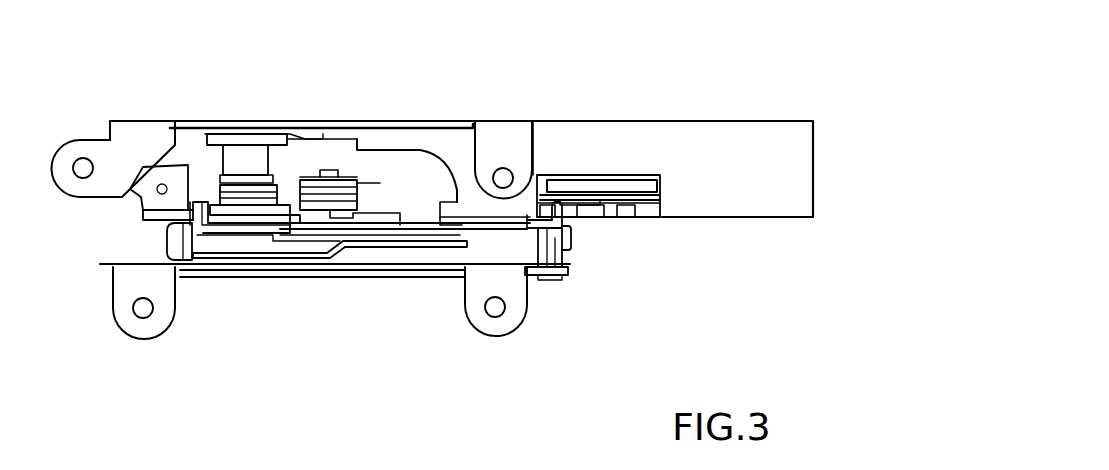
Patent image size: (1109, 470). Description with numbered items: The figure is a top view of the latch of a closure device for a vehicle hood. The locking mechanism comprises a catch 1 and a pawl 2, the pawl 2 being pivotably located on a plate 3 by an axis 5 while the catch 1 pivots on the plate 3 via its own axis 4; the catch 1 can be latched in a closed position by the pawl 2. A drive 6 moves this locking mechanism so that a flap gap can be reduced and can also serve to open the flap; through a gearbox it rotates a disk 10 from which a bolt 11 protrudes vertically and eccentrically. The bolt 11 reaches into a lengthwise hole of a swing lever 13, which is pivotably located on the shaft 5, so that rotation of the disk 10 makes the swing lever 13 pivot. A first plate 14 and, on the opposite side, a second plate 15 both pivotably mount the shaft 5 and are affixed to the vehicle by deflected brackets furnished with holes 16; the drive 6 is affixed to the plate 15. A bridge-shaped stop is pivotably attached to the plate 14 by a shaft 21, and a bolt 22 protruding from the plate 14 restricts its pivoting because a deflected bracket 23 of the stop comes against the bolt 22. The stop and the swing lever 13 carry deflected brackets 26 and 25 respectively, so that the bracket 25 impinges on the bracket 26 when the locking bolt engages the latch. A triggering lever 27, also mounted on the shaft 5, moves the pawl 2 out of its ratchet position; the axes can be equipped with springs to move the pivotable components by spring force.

The catch 1 is at (488, 228).
The pawl 2 is at (220, 232).
The plate 3 is at (393, 250).
The axis 4 is at (333, 170).
The axis or shaft 5 is at (247, 245).
The drive 6 is at (717, 227).
The disk 10 is at (589, 185).
The bolt 11 is at (594, 210).
The swing lever 13 is at (405, 128).
The first plate 14 is at (330, 272).
The second plate 15 is at (453, 125).
The holes 16 is at (98, 135).
The axis or shaft 21 is at (540, 246).
The bolt 22 is at (568, 250).
The deflected bracket 23 is at (583, 264).
The deflected bracket 25 is at (522, 227).
The deflected bracket 26 is at (563, 207).
The triggering lever 27 is at (155, 220).